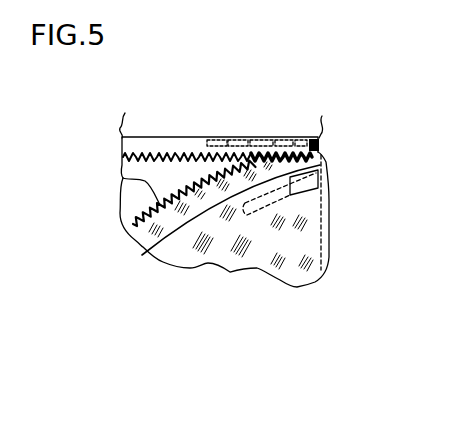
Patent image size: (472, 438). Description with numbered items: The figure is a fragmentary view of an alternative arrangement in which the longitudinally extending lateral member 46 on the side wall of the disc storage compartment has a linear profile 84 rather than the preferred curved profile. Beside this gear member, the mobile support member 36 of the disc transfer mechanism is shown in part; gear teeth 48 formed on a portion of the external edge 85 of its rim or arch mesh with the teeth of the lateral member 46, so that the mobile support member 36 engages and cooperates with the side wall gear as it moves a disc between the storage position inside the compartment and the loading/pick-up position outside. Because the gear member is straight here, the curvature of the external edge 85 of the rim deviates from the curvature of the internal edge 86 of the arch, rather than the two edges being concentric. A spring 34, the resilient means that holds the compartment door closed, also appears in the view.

The lateral member 46 is at (132, 146).
The linear profile 84 is at (178, 151).
The spring 34 is at (263, 137).
The gear teeth 48 is at (123, 178).
The external edge 85 is at (145, 212).
The internal edge 86 is at (200, 213).
The mobile support member 36 is at (265, 240).